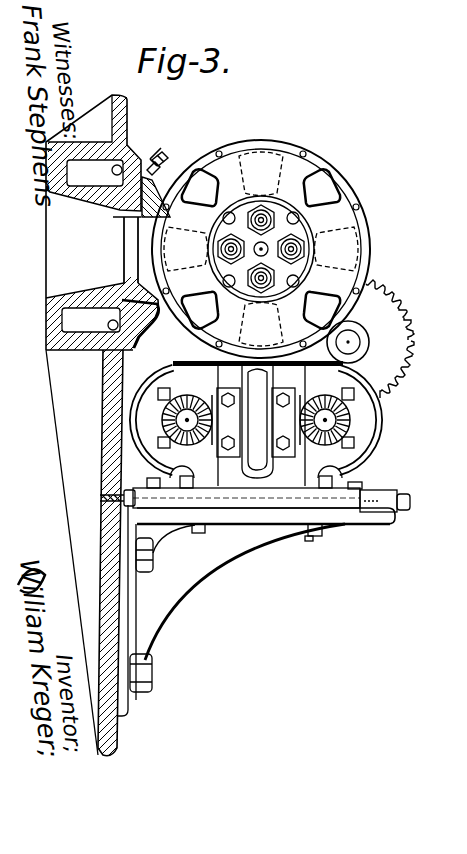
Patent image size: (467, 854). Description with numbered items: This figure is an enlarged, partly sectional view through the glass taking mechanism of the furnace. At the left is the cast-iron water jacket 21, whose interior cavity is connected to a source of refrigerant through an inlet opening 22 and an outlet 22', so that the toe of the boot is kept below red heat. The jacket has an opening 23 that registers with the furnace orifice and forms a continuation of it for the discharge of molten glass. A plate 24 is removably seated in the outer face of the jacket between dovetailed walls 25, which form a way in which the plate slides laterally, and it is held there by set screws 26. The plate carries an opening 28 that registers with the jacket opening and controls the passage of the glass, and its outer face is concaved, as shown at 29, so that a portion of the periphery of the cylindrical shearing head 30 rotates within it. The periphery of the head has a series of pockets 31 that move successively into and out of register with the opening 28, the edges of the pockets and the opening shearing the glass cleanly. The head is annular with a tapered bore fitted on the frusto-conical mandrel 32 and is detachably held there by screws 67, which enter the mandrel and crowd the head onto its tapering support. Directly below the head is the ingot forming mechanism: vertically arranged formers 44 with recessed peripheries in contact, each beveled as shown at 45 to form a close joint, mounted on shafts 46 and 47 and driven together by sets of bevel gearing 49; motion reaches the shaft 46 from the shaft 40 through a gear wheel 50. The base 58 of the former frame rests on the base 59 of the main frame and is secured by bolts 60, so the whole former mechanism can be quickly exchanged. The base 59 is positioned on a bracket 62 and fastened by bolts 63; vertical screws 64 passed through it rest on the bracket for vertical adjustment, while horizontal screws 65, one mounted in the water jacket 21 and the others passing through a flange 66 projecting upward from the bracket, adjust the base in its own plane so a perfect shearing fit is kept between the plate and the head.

The water jacket 21 is at (126, 146).
The inlet opening 22 is at (128, 347).
The outlet 22' is at (135, 154).
The opening 23 is at (100, 239).
The plate 24 is at (159, 168).
The dovetailed walls 25 is at (141, 327).
The set screws 26 is at (163, 157).
The opening 28 is at (140, 262).
The concaved outer face 29 is at (167, 204).
The shearing head 30 is at (261, 235).
The pockets 31 is at (262, 150).
The mandrel 32 is at (300, 237).
The shaft 40 is at (352, 343).
The formers 44 is at (359, 463).
The beveled periphery 45 is at (228, 514).
The shaft 46 is at (353, 427).
The shaft 47 is at (182, 421).
The bevel gearing 49 is at (350, 456).
The gear wheel 50 is at (416, 326).
The base 58 is at (218, 505).
The base 59 is at (332, 500).
The bolts 60 is at (322, 490).
The bracket 62 is at (155, 520).
The bolts 63 is at (310, 538).
The vertical screws 64 is at (356, 512).
The horizontal screws 65 is at (100, 498).
The flange 66 is at (390, 515).
The screws 67 is at (296, 216).